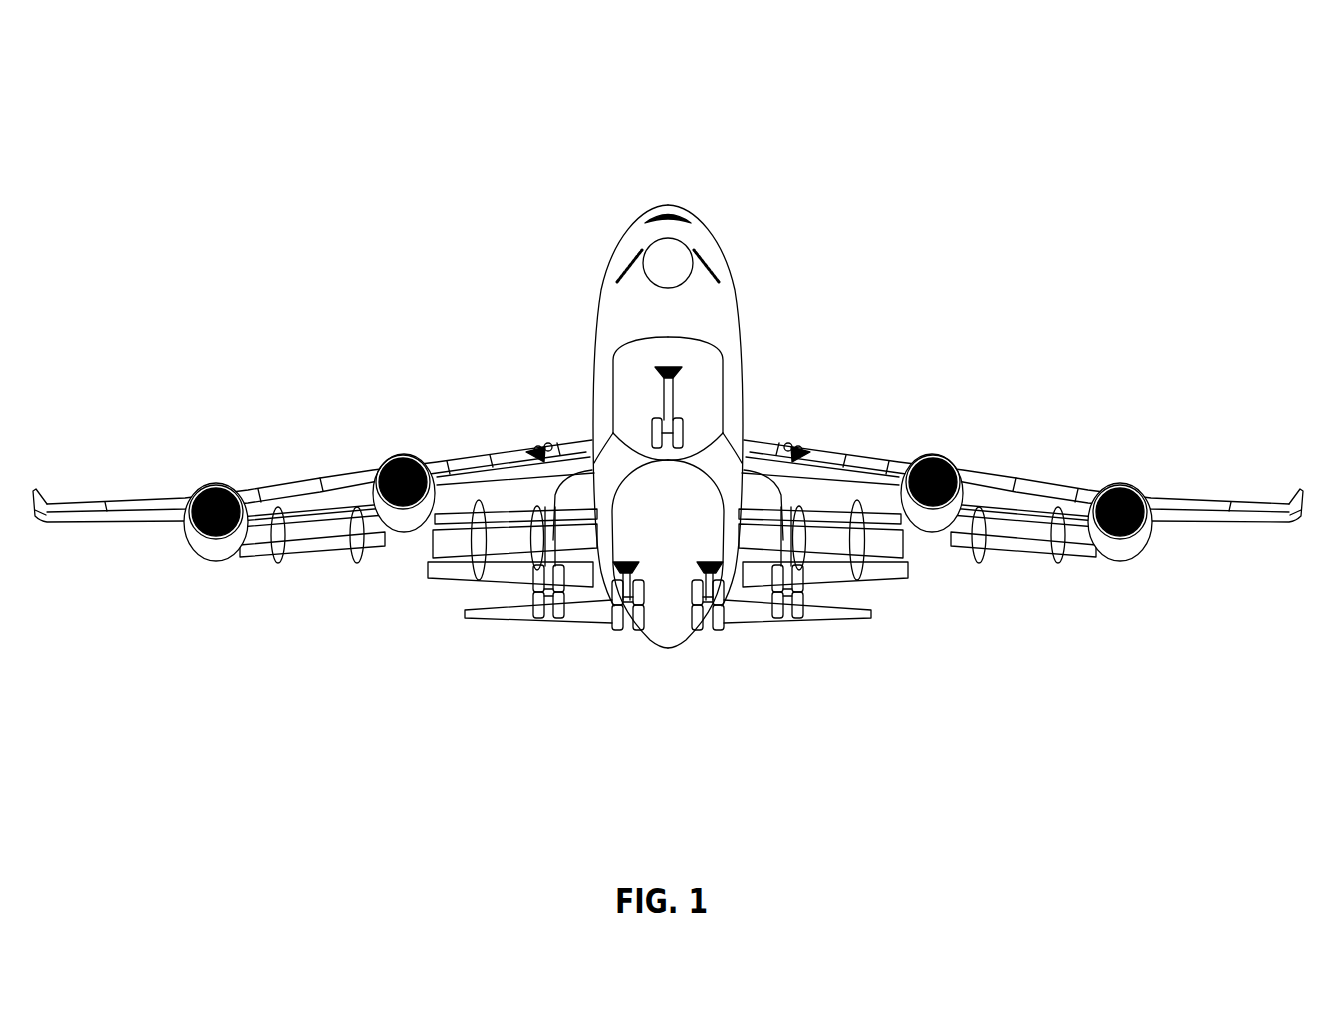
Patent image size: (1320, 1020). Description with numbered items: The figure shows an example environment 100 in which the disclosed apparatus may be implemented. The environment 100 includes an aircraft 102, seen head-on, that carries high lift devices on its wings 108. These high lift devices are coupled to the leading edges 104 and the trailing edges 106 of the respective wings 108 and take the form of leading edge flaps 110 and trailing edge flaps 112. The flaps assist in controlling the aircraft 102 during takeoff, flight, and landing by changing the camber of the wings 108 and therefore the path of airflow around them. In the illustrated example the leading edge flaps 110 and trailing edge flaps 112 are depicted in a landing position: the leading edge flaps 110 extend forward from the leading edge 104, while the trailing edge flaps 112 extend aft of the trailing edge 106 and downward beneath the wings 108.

The example environment 100 is at (126, 60).
The aircraft 102 is at (725, 264).
The leading edge 104 is at (548, 446).
The trailing edge 106 is at (176, 530).
The wing 108 is at (461, 437).
The leading edge flap 110 is at (130, 500).
The trailing edge flap 112 is at (311, 568).